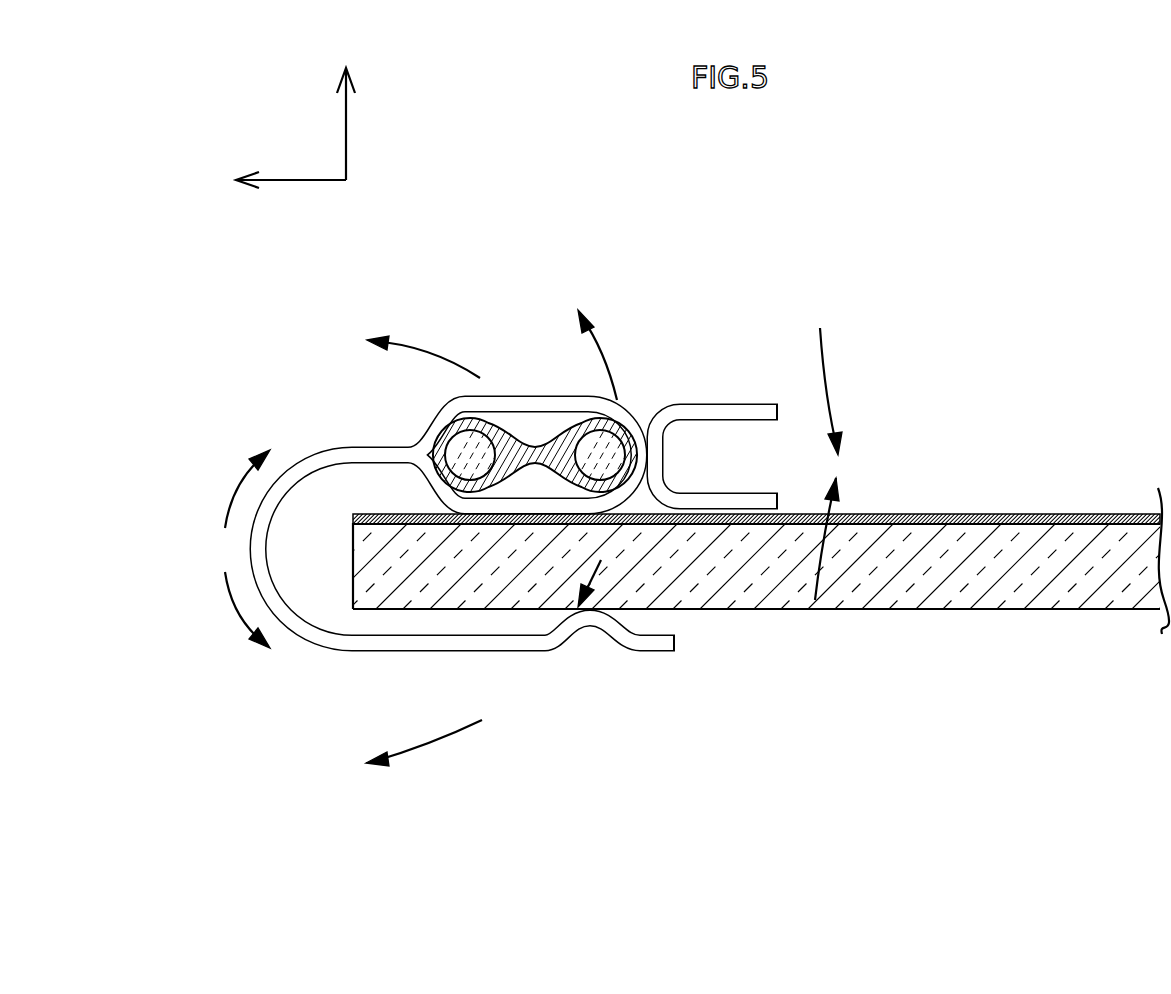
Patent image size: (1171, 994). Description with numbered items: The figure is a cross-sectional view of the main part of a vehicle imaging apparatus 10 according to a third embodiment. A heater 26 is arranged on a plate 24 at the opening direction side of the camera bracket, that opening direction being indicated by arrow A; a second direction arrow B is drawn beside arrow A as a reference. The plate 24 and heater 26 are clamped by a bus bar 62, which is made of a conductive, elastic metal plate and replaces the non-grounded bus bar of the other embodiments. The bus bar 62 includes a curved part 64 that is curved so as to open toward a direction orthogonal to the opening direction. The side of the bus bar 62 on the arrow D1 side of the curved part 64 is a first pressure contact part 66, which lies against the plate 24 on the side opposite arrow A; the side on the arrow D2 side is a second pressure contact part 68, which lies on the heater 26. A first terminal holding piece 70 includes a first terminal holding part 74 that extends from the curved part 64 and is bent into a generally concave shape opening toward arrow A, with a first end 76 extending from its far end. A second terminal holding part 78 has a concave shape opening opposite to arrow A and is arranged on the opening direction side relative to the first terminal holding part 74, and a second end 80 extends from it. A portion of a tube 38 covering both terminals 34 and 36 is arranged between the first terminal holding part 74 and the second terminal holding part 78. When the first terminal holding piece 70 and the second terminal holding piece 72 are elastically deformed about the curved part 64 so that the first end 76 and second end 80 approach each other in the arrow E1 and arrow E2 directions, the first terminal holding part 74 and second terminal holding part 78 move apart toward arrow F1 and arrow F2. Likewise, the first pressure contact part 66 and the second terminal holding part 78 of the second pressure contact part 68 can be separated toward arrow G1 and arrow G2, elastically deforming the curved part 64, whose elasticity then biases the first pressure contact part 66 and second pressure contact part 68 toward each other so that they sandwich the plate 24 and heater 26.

The vehicle imaging apparatus 10 is at (949, 359).
The plate 24 is at (719, 562).
The heater 26 is at (970, 513).
The terminal 34 is at (527, 395).
The terminal 36 is at (445, 455).
The tube 38 is at (538, 437).
The bus bar 62 is at (422, 537).
The curved part 64 is at (250, 547).
The first pressure contact part 66 is at (528, 668).
The second pressure contact part 68 is at (360, 373).
The first terminal holding piece 70 is at (738, 399).
The second terminal holding piece 72 is at (773, 463).
The first terminal holding part 74 is at (532, 495).
The first end 76 is at (700, 402).
The second terminal holding part 78 is at (567, 397).
The second end 80 is at (700, 490).
The arrow A direction A is at (348, 133).
The direction B is at (298, 182).
The arrow D1 direction D1 is at (236, 612).
The arrow D2 direction D2 is at (238, 486).
The arrow E1 direction E1 is at (825, 360).
The arrow E2 direction E2 is at (822, 606).
The arrow F1 direction F1 is at (598, 573).
The arrow F2 direction F2 is at (603, 350).
The arrow G1 direction G1 is at (441, 740).
The arrow G2 direction G2 is at (432, 351).